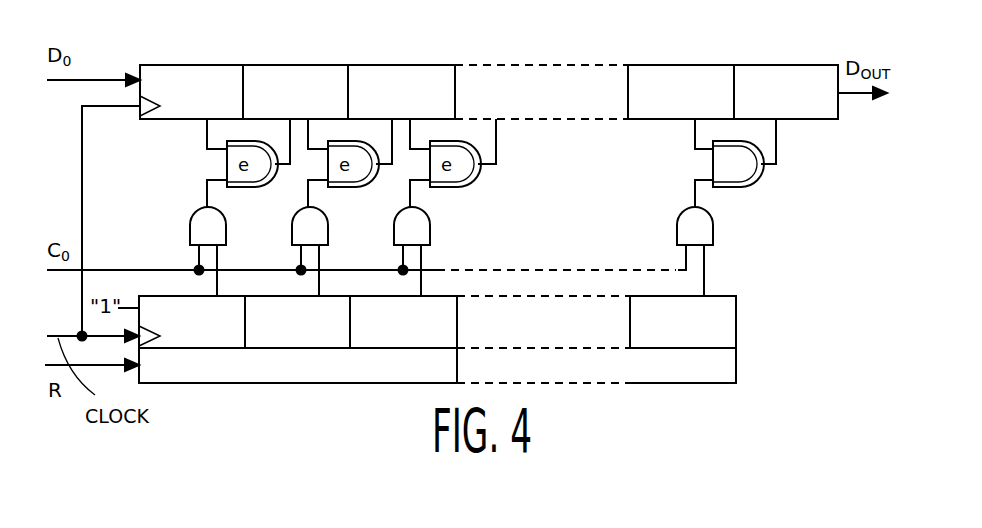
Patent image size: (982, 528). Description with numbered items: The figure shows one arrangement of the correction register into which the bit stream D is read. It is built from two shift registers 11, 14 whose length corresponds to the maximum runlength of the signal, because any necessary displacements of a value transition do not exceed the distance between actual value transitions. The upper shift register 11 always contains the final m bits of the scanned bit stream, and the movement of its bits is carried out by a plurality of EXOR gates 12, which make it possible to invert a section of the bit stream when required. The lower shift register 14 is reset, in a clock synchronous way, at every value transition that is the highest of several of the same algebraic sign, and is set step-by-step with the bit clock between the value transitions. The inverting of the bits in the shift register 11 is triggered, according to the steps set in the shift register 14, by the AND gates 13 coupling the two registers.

The shift register 11 is at (692, 72).
The EXOR gate 12 is at (740, 188).
The AND gate 13 is at (713, 228).
The shift register 14 is at (736, 330).